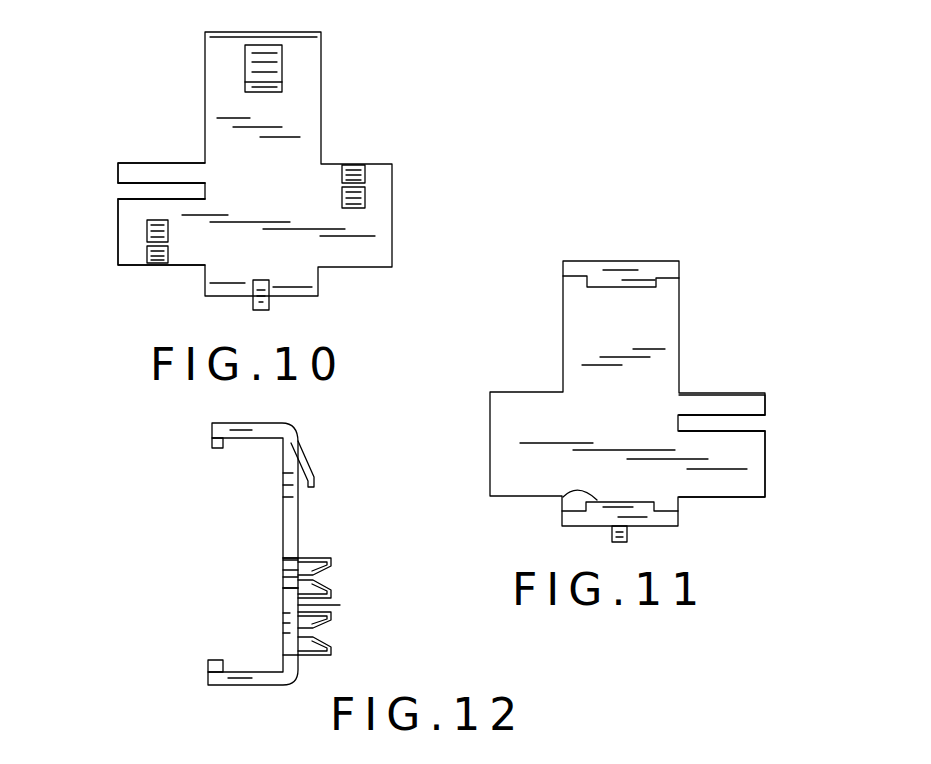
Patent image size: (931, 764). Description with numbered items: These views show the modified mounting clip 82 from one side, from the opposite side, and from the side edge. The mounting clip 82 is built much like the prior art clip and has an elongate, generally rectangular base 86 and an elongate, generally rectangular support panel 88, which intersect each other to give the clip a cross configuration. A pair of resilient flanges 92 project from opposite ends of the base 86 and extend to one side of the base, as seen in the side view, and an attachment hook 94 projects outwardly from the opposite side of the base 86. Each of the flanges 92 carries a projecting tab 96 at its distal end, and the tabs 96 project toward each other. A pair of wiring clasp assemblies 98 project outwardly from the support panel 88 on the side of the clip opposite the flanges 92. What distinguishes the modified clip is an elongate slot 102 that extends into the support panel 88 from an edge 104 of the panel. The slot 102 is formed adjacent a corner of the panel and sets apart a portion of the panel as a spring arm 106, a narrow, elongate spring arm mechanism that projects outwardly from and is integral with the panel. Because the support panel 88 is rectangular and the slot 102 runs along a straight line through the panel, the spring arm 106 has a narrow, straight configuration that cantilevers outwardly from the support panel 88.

In FIG. 10, the mounting clip 82 is at (378, 208).
In FIG. 11, the mounting clip 82 is at (660, 365).
In FIG. 12, the mounting clip 82 is at (318, 525).
In FIG. 10, the base 86 is at (300, 118).
In FIG. 11, the base 86 is at (662, 326).
In FIG. 12, the base 86 is at (300, 508).
In FIG. 10, the support panel 88 is at (367, 252).
In FIG. 11, the support panel 88 is at (505, 432).
In FIG. 12, the support panel 88 is at (290, 570).
In FIG. 11, the resilient flanges 92 is at (620, 260).
In FIG. 12, the resilient flanges 92 is at (245, 422).
In FIG. 10, the attachment hook 94 is at (277, 73).
In FIG. 12, the attachment hook 94 is at (310, 460).
In FIG. 11, the projecting tabs 96 is at (605, 290).
In FIG. 12, the projecting tabs 96 is at (212, 447).
In FIG. 10, the wiring clasp assemblies 98 is at (364, 157).
In FIG. 12, the wiring clasp assemblies 98 is at (342, 569).
In FIG. 10, the slot 102 is at (99, 193).
In FIG. 11, the slot 102 is at (774, 422).
In FIG. 12, the slot 102 is at (281, 587).
In FIG. 10, the edge 104 is at (118, 225).
In FIG. 11, the edge 104 is at (768, 452).
In FIG. 12, the edge 104 is at (340, 606).
In FIG. 10, the spring arm 106 is at (133, 170).
In FIG. 11, the spring arm 106 is at (728, 401).
In FIG. 12, the spring arm 106 is at (285, 557).